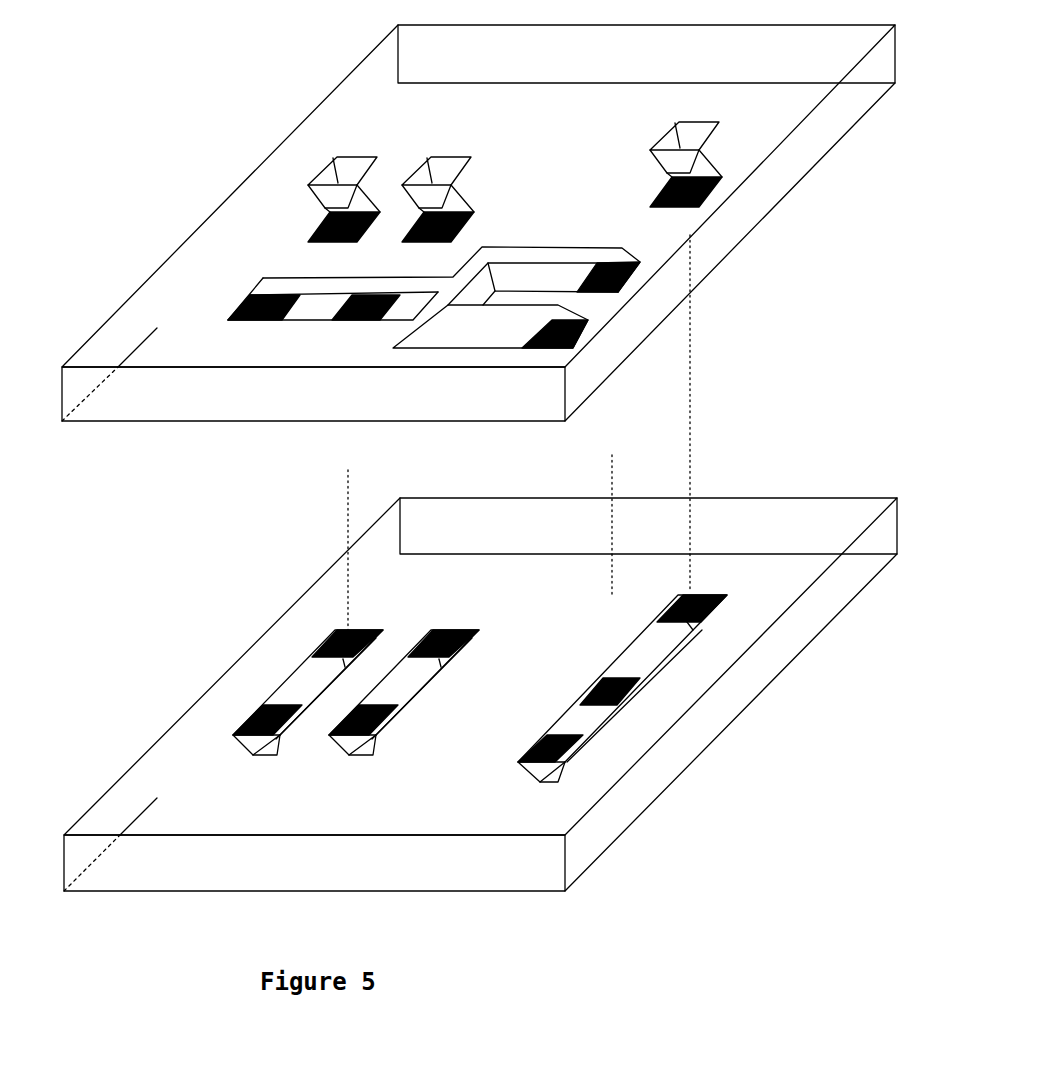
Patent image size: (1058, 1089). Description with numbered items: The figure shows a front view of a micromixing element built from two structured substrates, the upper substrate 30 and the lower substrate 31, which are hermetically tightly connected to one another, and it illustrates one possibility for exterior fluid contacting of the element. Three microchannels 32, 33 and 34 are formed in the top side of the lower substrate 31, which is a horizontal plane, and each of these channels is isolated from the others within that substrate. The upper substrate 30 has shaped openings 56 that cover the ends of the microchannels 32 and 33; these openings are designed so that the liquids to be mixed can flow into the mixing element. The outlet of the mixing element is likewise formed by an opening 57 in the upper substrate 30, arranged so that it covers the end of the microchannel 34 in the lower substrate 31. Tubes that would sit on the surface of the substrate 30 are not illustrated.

The substrate 30 is at (733, 243).
The substrate 31 is at (826, 606).
The microchannel 32 is at (317, 667).
The microchannel 33 is at (393, 700).
The microchannel 34 is at (603, 712).
The shaped openings 56 is at (435, 182).
The opening 57 is at (697, 133).